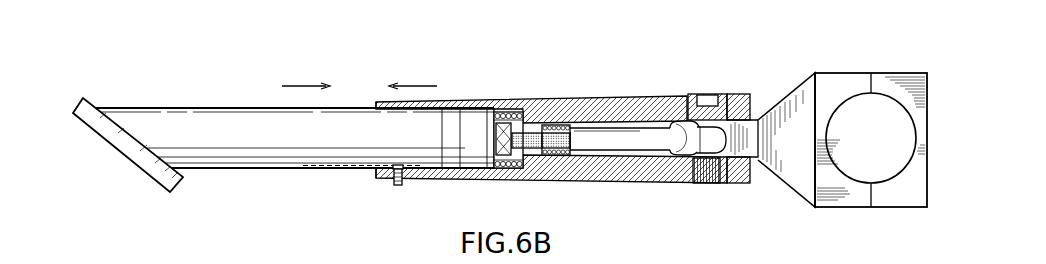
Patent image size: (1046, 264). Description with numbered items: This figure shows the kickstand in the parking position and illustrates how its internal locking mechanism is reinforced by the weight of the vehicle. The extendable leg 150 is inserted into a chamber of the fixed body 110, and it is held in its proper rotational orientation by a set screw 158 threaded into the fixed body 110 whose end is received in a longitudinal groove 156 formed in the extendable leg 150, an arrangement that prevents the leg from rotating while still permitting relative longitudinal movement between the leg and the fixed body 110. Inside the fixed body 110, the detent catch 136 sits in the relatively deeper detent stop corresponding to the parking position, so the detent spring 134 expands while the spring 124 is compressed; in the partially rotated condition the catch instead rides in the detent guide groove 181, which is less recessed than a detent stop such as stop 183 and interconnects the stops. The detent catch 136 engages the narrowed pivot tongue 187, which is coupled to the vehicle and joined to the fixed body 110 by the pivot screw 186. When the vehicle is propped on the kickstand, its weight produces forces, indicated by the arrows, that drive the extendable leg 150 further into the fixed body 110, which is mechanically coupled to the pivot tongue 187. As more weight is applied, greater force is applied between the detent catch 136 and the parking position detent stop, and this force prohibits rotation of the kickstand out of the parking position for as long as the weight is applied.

The fixed body 110 is at (548, 182).
The lock nut 124 is at (507, 111).
The detent spring 134 is at (557, 125).
The detent catch 136 is at (648, 133).
The extendable leg 150 is at (217, 169).
The groove 156 is at (332, 167).
The set screw 158 is at (400, 186).
The detent guide groove 181 is at (688, 148).
The detent position stop 183 is at (713, 140).
The pivot screw 186 is at (708, 93).
The pivot tongue 187 is at (742, 130).